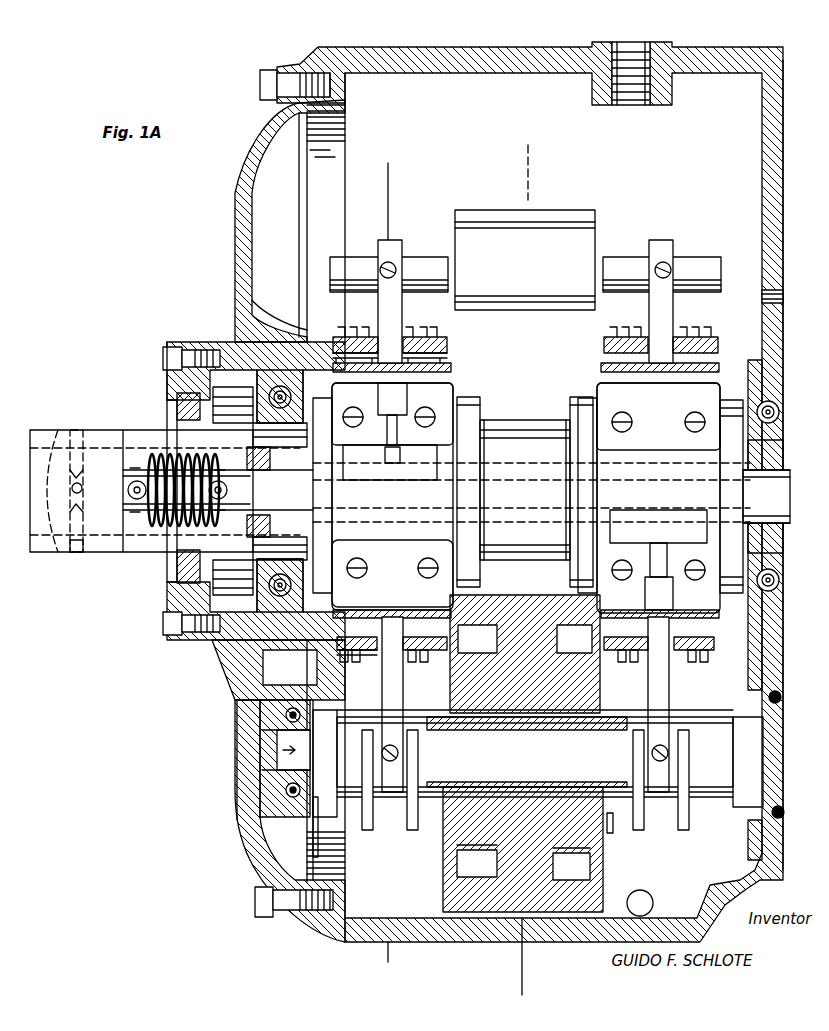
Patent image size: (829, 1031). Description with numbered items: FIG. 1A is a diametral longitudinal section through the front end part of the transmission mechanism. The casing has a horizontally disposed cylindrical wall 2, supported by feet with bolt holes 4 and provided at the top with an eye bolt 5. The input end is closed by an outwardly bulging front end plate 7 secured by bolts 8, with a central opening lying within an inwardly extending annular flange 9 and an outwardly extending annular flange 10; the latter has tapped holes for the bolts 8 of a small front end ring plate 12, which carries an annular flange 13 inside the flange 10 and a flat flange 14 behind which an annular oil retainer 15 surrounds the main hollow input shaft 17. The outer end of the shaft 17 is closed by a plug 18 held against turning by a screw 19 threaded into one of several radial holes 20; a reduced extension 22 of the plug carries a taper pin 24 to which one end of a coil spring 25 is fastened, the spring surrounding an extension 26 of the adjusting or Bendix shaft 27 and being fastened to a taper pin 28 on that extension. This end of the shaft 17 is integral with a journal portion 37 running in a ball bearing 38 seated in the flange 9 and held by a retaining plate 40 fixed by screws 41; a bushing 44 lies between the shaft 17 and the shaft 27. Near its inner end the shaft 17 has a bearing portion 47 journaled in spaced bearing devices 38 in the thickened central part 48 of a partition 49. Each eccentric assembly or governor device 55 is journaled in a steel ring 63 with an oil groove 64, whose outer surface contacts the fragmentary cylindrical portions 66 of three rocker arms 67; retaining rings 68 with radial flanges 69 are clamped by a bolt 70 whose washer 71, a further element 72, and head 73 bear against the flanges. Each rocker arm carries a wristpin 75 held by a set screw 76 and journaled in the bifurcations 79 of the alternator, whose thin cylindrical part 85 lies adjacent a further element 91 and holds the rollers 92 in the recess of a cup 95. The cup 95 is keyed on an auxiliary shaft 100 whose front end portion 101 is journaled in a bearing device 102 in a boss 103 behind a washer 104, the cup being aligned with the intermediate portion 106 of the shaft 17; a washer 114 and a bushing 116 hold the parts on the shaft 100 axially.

The cylindrical wall of casing 2 is at (486, 47).
The bolt holes 4 is at (390, 560).
The eye bolt 5 is at (640, 44).
The front end plate 7 is at (254, 150).
The bolts 8 is at (268, 70).
The inwardly extending annular flange 9 is at (300, 325).
The outwardly extending annular flange 10 is at (210, 343).
The front end ring plate 12 is at (184, 342).
The annular flange 13 is at (213, 395).
The flat flange 14 is at (177, 405).
The annular oil retainer 15 is at (178, 598).
The main hollow input shaft 17 is at (92, 553).
The plug 18 is at (54, 432).
The screw 19 is at (76, 552).
The radial holes 20 is at (80, 430).
The reduced extension 22 is at (150, 456).
The taper pin 24 is at (137, 520).
The coil spring 25 is at (165, 525).
The extension of adjusting shaft 26 is at (220, 508).
The adjusting or Bendix shaft 27 is at (778, 492).
The taper pin 28 is at (195, 530).
The journal portion 37 is at (336, 418).
The ball bearing 38 is at (776, 405).
The retaining plate 40 is at (262, 668).
The screws 41 is at (240, 312).
The bushing 44 is at (258, 437).
The bearing portion 47 is at (766, 448).
The thickened central part of partition 48 is at (766, 366).
The partition 49 is at (780, 47).
The eccentric assembly or governor device 55 is at (712, 625).
The steel ring 63 is at (322, 335).
The oil groove 64 is at (332, 645).
The fragmentary cylindrical portions 66 is at (445, 335).
The rocker arms 67 is at (398, 247).
The retaining rings 68 is at (612, 338).
The radial flange 69 is at (636, 336).
The bolt 70 is at (412, 663).
The washer 71 is at (358, 663).
The ring 72 is at (344, 663).
The head 73 is at (428, 663).
The wristpin 75 is at (336, 257).
The set screw 76 is at (384, 264).
The bifurcations 79 is at (367, 832).
The thin cylindrical part 85 is at (457, 866).
The hub 91 is at (565, 712).
The roller 92 is at (462, 876).
The cup 95 is at (562, 222).
The auxiliary shafts 100 is at (282, 750).
The front end portion / intermediate bearing portion 101 is at (265, 748).
The bearing device 102 is at (778, 690).
The boss 103 is at (240, 838).
The washer 104 is at (262, 788).
The intermediate portion of shaft 106 is at (515, 560).
The washer 114 is at (317, 822).
The bushing 116 is at (611, 830).